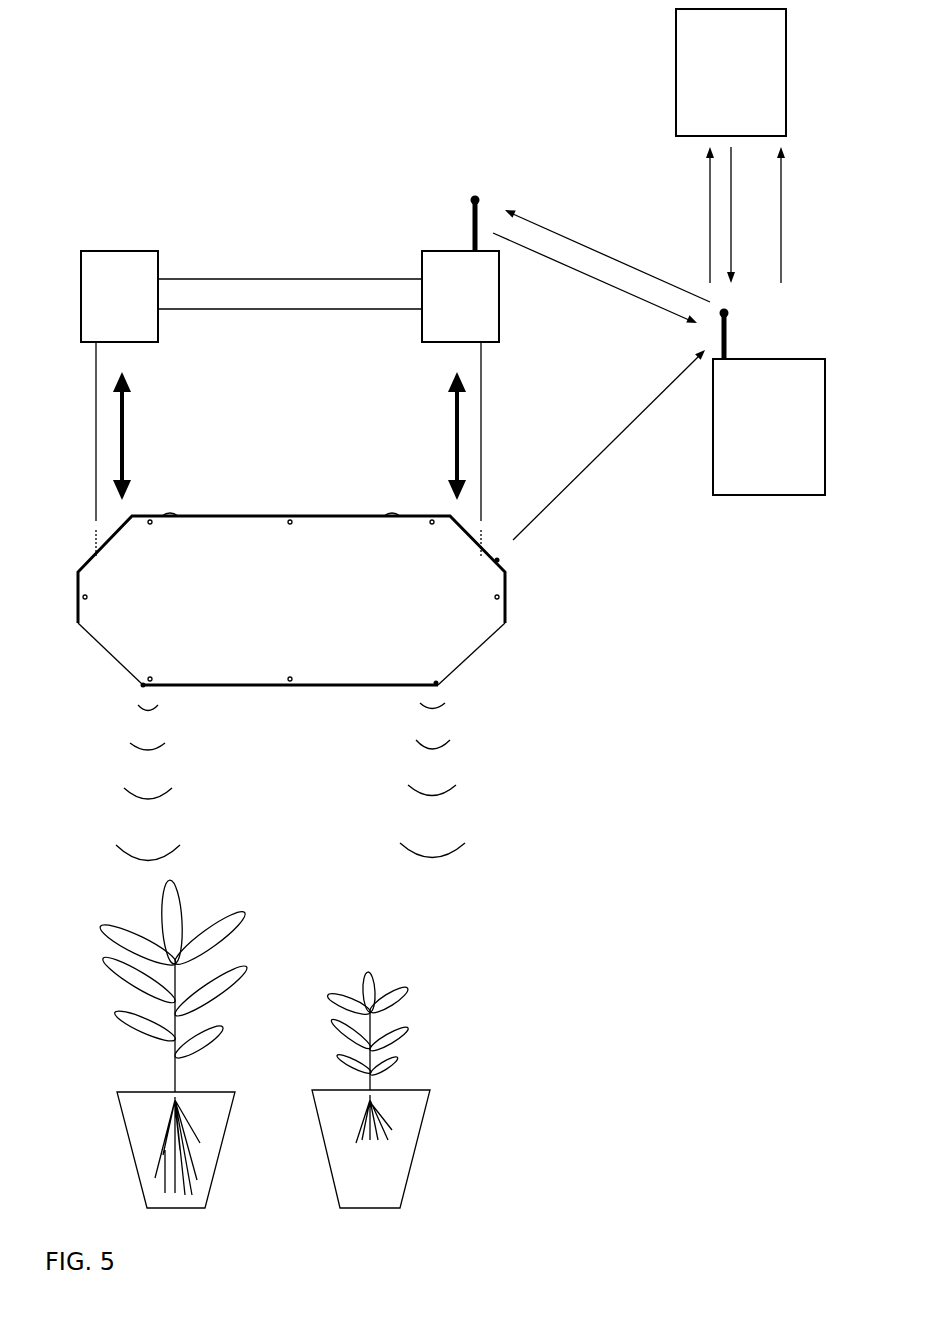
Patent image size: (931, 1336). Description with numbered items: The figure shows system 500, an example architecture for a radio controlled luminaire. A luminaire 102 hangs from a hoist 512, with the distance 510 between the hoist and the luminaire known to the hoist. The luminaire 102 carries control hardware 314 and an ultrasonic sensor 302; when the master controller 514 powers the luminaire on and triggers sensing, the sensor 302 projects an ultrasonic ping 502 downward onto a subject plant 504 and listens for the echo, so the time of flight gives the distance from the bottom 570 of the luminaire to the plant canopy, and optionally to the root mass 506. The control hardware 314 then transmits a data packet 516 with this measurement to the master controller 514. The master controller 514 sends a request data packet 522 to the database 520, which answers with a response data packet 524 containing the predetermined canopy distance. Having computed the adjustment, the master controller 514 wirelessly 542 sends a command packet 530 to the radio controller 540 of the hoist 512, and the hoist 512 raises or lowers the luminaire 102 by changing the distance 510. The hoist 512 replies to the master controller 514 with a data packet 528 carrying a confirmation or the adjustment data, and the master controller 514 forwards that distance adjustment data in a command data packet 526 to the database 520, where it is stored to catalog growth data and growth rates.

The system 500 is at (140, 54).
The hoist 512 is at (100, 309).
The radio controller 540 is at (467, 220).
The distance 510 is at (455, 453).
The database 520 is at (709, 86).
The request data packet 522 is at (707, 205).
The response data packet 524 is at (733, 242).
The command data packet 526 is at (782, 263).
The command packet 530 is at (642, 270).
The data packet 528 is at (572, 270).
The wireless link 542 is at (728, 333).
The master controller 514 is at (747, 470).
The data packet 516 is at (588, 463).
The luminaire 102 is at (271, 621).
The bottom of the luminaire 570 is at (390, 687).
The ultrasonic sensor 302 is at (143, 685).
The control hardware 314 is at (500, 563).
The ultrasonic ping 502 is at (125, 795).
The plant 504 is at (133, 983).
The root mass 506 is at (165, 1150).